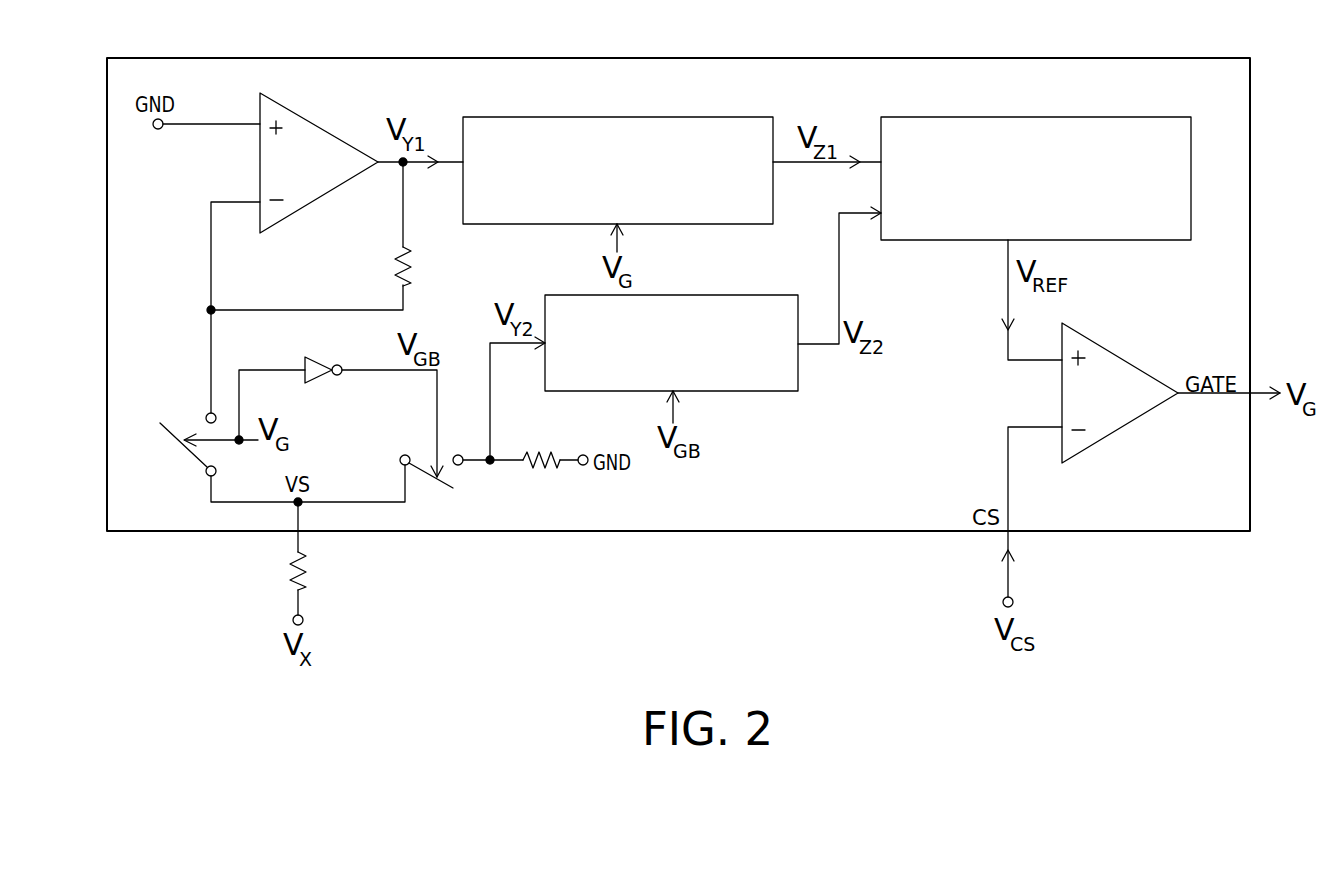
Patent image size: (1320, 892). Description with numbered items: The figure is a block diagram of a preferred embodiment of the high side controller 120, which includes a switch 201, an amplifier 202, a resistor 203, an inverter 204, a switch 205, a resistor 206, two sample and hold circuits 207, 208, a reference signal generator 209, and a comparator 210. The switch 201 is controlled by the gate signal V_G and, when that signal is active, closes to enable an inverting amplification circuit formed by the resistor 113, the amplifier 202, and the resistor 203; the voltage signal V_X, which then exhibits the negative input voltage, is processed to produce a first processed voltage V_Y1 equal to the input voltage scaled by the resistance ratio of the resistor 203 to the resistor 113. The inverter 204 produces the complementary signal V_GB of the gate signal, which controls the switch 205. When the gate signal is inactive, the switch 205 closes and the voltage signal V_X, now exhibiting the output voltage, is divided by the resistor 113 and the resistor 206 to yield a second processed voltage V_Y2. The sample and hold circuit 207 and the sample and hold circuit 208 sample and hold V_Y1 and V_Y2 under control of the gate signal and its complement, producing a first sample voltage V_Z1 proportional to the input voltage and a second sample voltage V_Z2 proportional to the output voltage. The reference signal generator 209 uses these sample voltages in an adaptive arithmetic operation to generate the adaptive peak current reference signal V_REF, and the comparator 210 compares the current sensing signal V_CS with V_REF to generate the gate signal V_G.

The high side controller 120 is at (673, 58).
The switch 201 is at (207, 432).
The amplifier 202 is at (312, 118).
The resistor 203 is at (412, 268).
The inverter 204 is at (318, 383).
The switch 205 is at (446, 477).
The resistor 206 is at (535, 452).
The sample and hold circuit 207 is at (565, 117).
The sample and hold circuit 208 is at (727, 391).
The reference signal generator 209 is at (1058, 117).
The comparator 210 is at (1118, 355).
The resistor 113 is at (308, 570).